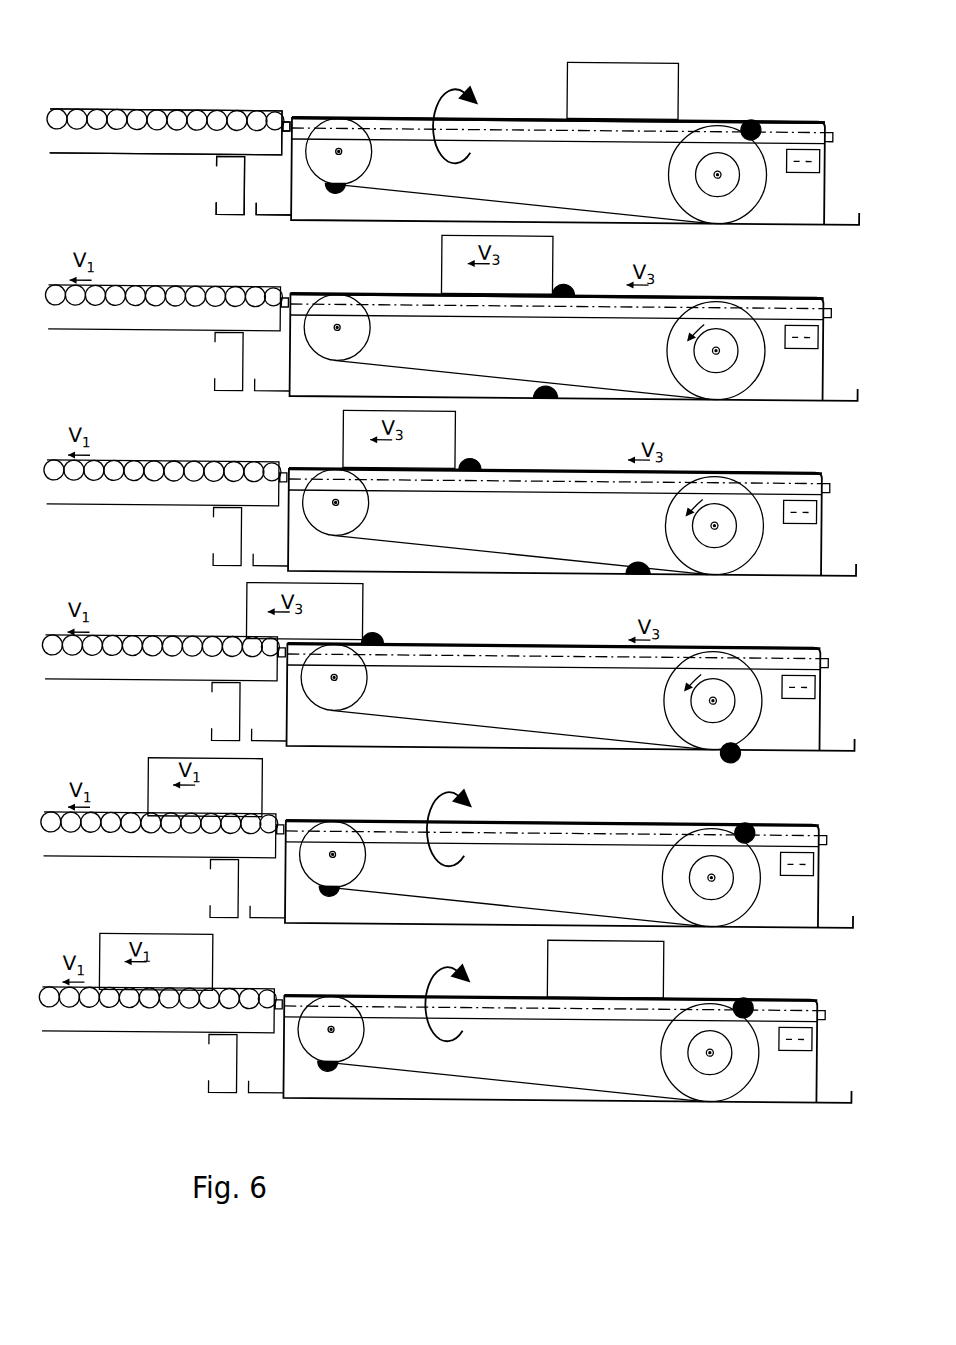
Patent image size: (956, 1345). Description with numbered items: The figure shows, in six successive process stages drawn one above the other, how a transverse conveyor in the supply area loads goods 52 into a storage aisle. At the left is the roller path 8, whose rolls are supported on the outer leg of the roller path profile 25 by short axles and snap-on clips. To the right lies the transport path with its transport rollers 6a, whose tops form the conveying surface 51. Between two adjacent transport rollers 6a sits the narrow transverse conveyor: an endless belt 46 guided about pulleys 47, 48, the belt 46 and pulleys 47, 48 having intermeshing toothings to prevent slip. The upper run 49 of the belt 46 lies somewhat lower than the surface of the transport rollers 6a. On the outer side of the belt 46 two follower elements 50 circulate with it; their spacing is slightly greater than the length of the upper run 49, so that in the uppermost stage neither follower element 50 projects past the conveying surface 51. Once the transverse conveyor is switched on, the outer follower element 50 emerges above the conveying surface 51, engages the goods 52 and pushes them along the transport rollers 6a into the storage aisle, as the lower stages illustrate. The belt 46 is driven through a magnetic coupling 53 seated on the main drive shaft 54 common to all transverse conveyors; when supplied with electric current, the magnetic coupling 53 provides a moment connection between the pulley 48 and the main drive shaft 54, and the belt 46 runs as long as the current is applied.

The transport rollers 6a is at (571, 569).
The roller path 8 is at (164, 168).
The roller path profile 25 is at (170, 162).
The endless belt 46 is at (557, 259).
The pulley 47 is at (370, 40).
The pulley 48 is at (684, 262).
The upper run 49 is at (557, 167).
The follower elements 50 is at (561, 342).
The conveying surface 51 is at (575, 218).
The goods 52 is at (461, 505).
The magnetic coupling 53 is at (735, 387).
The main drive shaft 54 is at (704, 395).